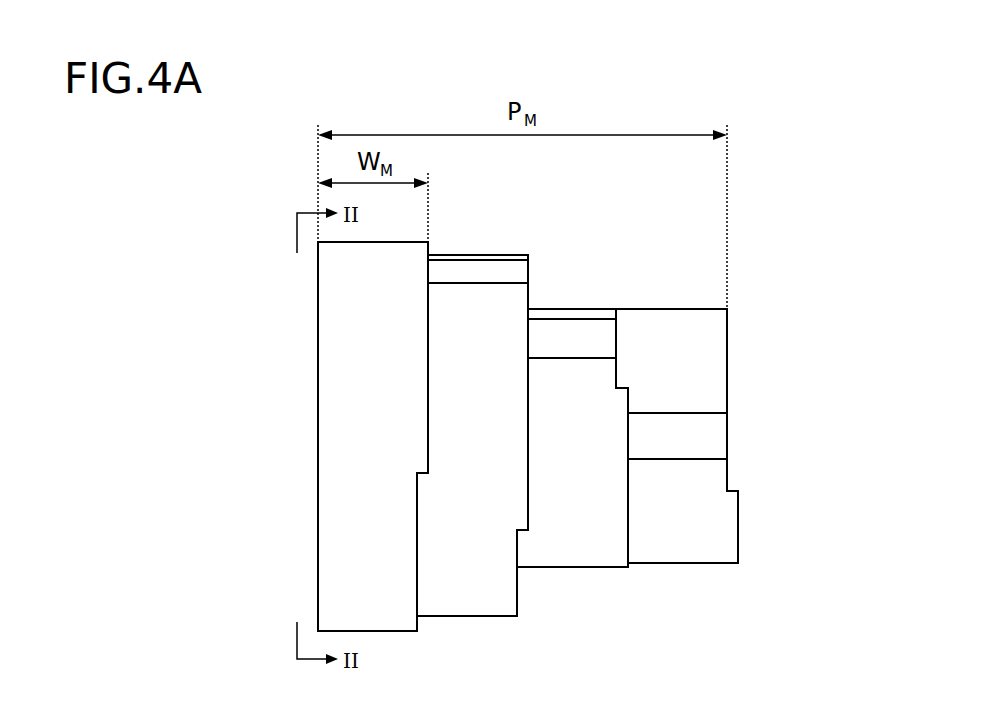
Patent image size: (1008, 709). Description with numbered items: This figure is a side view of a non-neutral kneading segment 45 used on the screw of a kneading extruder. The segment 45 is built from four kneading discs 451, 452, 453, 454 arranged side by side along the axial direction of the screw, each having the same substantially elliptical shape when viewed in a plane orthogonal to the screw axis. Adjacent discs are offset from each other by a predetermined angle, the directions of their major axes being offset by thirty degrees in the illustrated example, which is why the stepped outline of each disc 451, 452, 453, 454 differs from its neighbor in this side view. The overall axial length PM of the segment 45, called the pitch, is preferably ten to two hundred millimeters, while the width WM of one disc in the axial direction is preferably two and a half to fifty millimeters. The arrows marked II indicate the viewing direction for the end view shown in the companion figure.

The non-neutral segment 45 is at (797, 138).
The kneading disc 451 is at (371, 621).
The kneading disc 452 is at (472, 600).
The kneading disc 453 is at (571, 555).
The kneading disc 454 is at (680, 555).